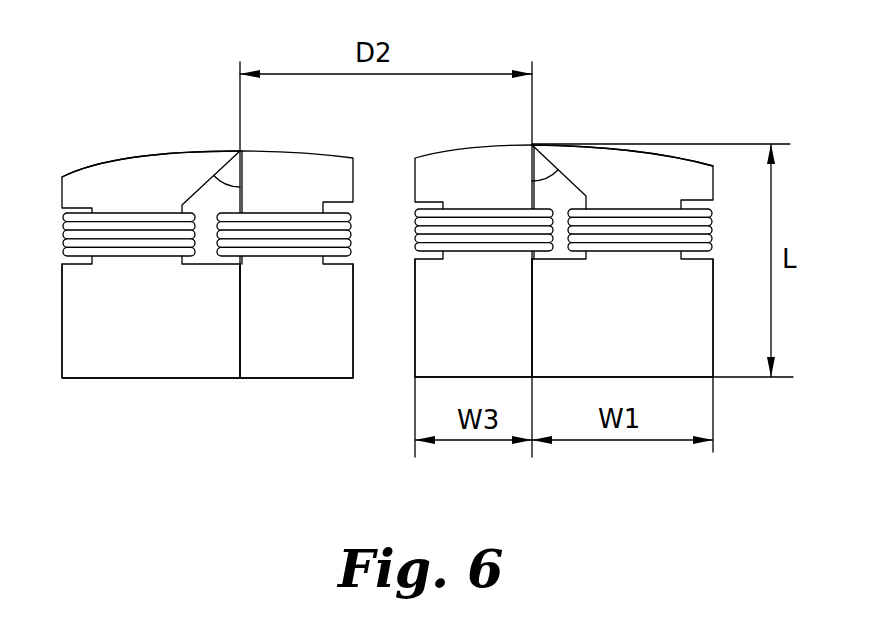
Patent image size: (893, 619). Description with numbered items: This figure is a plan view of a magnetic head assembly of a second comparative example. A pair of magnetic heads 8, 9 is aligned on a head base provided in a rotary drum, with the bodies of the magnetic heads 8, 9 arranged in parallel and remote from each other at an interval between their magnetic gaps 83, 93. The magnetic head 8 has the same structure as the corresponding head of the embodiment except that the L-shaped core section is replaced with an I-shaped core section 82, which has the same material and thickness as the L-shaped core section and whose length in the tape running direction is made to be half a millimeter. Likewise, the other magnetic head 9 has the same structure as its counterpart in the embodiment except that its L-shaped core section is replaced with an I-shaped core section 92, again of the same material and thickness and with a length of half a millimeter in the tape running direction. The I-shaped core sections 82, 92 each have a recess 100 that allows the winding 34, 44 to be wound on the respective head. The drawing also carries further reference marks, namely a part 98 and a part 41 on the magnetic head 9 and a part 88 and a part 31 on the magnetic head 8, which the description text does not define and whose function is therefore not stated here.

The magnetic head 9 is at (137, 88).
The magnetic head 8 is at (676, 87).
The crown edge of second piston 98 is at (90, 160).
The magnetic gap 93 is at (240, 151).
The winding 44 is at (270, 212).
The recess 100 is at (418, 207).
The winding 34 is at (482, 209).
The magnetic gap 83 is at (532, 145).
The crown edge of first piston 88 is at (684, 150).
The skirt portion of second piston 41 is at (101, 378).
The I-shaped core section 92 is at (277, 378).
The I-shaped core section 82 is at (422, 348).
The skirt portion of first piston 31 is at (703, 356).